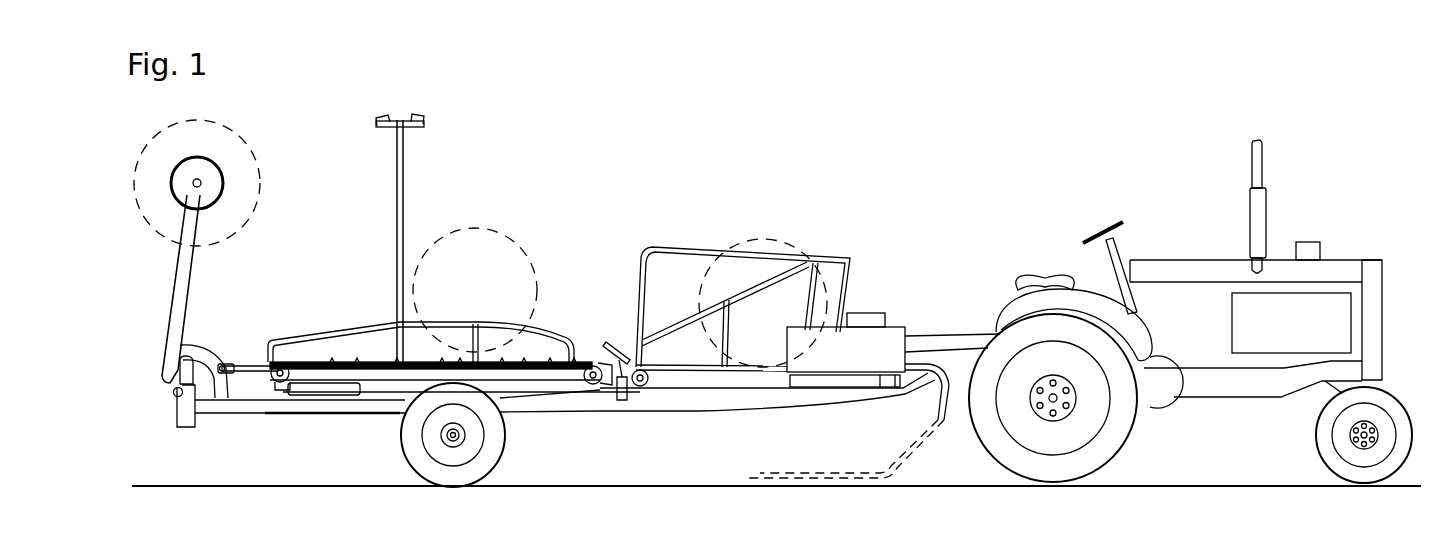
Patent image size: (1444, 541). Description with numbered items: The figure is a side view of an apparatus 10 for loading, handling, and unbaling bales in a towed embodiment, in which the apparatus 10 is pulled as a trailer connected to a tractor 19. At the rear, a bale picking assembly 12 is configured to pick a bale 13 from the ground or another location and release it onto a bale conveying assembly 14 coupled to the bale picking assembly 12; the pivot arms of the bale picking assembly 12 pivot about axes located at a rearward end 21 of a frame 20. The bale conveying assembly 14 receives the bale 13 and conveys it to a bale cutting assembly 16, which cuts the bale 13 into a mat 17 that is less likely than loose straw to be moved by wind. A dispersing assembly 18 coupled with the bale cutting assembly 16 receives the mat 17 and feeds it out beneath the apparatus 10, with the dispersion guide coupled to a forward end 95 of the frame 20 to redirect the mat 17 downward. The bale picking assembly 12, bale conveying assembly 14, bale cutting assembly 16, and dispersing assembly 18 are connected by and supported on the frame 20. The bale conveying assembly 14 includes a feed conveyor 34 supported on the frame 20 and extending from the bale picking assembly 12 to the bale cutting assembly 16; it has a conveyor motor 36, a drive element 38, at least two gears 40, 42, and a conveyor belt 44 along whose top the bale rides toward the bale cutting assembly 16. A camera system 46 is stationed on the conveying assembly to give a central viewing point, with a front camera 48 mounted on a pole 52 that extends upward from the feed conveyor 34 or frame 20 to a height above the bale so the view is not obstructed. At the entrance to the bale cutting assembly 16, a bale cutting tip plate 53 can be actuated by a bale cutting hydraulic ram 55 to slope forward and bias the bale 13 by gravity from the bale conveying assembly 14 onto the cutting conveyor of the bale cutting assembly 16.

The apparatus 10 is at (648, 118).
The bale picking assembly 12 is at (255, 112).
The bale 13 is at (263, 167).
The bale conveying assembly 14 is at (558, 212).
The bale cutting assembly 16 is at (755, 218).
The mat 17 is at (922, 442).
The dispersing assembly 18 is at (943, 298).
The tractor 19 is at (1159, 268).
The frame 20 is at (693, 400).
The rearward end 21 is at (213, 408).
The feed conveyor 34 is at (398, 378).
The conveyor motor 36 is at (302, 395).
The drive element 38 is at (277, 383).
The gear 40 is at (280, 366).
The gear 42 is at (593, 395).
The conveyor belt 44 is at (342, 358).
The camera system 46 is at (398, 262).
The front camera 48 is at (373, 130).
The pole 52 is at (405, 223).
The bale cutting tip plate 53 is at (611, 347).
The bale cutting hydraulic ram 55 is at (625, 400).
The forward end 95 is at (915, 390).